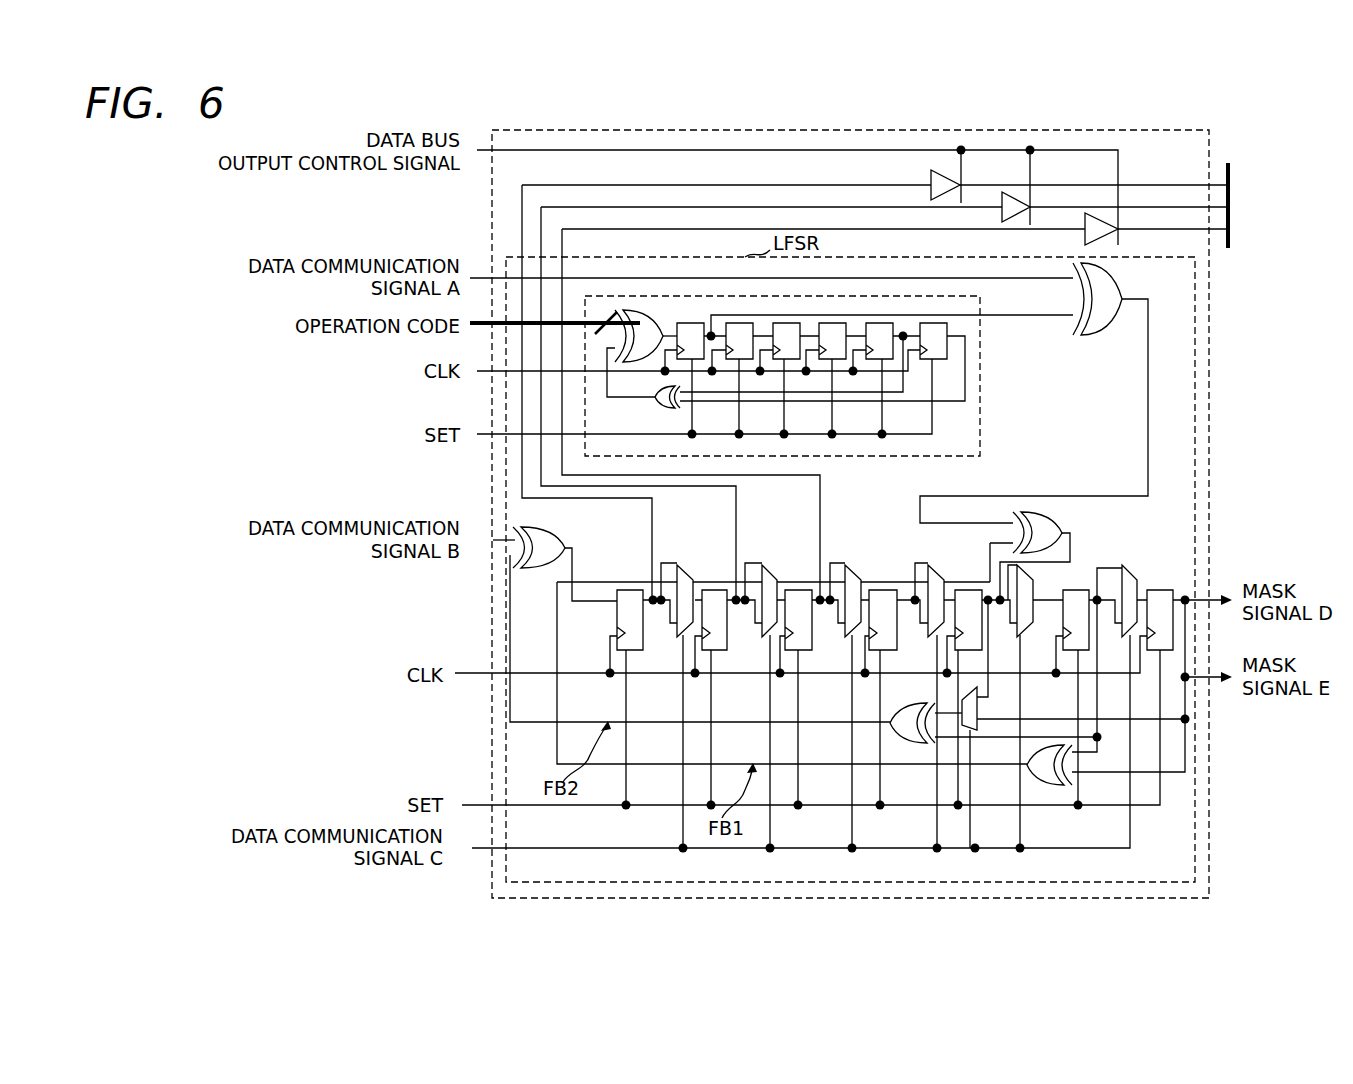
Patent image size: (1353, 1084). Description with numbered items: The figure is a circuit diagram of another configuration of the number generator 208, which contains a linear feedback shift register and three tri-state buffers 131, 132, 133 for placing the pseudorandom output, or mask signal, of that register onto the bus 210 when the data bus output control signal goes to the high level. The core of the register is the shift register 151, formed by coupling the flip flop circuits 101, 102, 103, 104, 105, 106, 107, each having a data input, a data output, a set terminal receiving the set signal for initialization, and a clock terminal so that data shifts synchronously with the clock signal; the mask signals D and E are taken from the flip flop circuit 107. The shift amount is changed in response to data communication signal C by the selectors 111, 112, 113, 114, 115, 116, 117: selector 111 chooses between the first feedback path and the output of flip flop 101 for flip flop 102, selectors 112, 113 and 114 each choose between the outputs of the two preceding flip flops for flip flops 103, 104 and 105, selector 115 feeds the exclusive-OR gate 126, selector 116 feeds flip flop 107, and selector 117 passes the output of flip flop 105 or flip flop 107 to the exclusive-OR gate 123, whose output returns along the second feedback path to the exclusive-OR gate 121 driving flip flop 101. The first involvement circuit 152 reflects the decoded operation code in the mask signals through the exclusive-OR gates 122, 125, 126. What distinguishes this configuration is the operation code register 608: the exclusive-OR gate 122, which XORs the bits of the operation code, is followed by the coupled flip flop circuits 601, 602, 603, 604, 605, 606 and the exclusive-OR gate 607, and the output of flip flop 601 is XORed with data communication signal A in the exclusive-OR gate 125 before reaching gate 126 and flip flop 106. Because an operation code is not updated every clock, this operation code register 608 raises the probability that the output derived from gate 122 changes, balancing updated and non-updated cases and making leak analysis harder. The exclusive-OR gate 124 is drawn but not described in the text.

The flip flop circuit 101 is at (645, 636).
The flip flop circuit 102 is at (730, 636).
The flip flop circuit 103 is at (815, 636).
The flip flop circuit 104 is at (900, 636).
The flip flop circuit 105 is at (965, 590).
The flip flop circuit 106 is at (1062, 625).
The flip flop circuit 107 is at (1165, 590).
The selector 111 is at (687, 565).
The selector 112 is at (772, 565).
The selector 113 is at (852, 565).
The selector 114 is at (937, 565).
The selector 115 is at (1035, 578).
The selector 116 is at (1133, 570).
The selector 117 is at (978, 705).
The exclusive-OR gate 121 is at (565, 533).
The exclusive-OR gate 122 is at (653, 305).
The exclusive-OR gate 123 is at (913, 745).
The exclusive OR circuit 124 is at (1047, 788).
The exclusive-OR gate 125 is at (1103, 338).
The exclusive-OR gate 126 is at (1055, 513).
The tri-state buffer 131 is at (936, 170).
The tri-state buffer 132 is at (1005, 193).
The tri-state buffer 133 is at (1105, 215).
The shift register 151 is at (602, 622).
The first involvement circuit 152 is at (1162, 312).
The number generator 208 is at (1176, 900).
The bus 210 is at (1232, 225).
The flip flop circuit 601 is at (688, 323).
The flip flop circuit 602 is at (737, 323).
The flip flop circuit 603 is at (784, 323).
The flip flop circuit 604 is at (830, 323).
The flip flop circuit 605 is at (877, 323).
The flip flop circuit 606 is at (931, 323).
The exclusive-OR gate 607 is at (656, 400).
The operation code LFSR 608 is at (985, 440).